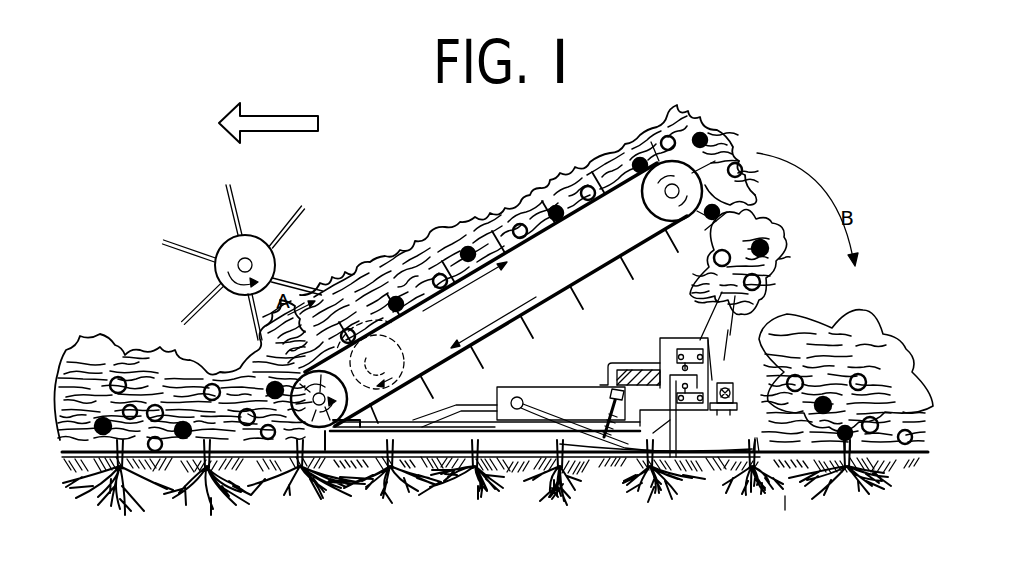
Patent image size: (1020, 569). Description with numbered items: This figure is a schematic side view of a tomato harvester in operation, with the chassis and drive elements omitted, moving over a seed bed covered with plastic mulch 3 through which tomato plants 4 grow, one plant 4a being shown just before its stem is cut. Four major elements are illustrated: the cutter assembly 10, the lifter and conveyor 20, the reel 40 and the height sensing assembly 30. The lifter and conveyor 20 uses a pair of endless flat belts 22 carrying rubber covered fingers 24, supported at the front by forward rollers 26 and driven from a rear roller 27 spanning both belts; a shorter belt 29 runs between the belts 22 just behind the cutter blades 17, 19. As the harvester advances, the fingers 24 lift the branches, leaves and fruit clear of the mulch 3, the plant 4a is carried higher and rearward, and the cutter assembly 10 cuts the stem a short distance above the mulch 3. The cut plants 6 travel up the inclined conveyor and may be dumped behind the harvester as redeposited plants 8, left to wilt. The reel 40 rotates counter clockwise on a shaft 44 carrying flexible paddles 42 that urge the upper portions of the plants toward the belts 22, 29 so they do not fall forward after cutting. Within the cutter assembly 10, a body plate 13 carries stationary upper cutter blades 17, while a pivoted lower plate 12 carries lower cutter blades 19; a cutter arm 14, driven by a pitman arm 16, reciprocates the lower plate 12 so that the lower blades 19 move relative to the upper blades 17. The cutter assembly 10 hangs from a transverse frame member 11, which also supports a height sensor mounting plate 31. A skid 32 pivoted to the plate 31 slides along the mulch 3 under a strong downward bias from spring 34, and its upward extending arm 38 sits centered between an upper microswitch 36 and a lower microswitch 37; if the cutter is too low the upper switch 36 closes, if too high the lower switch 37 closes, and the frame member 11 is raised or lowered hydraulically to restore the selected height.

The plastic mulch 3 is at (758, 446).
The tomato plants 4 is at (126, 350).
The plant just prior to cutting 4a is at (192, 414).
The cut plants 6 is at (459, 207).
The redeposited plants 8 is at (888, 398).
The cutter assembly 10 is at (482, 396).
The transverse frame member 11 is at (644, 372).
The lower plate 12 is at (445, 432).
The body plate 13 is at (434, 389).
The cutter arm 14 is at (465, 403).
The pitman arm 16 is at (733, 395).
The upper cutter blades 17 is at (378, 421).
The lower cutter blades 19 is at (328, 434).
The lifter and conveyor 20 is at (503, 284).
The endless flat belts 22 is at (549, 232).
The rubber covered fingers 24 is at (588, 300).
The forward rollers 26 is at (376, 362).
The rear roller 27 is at (655, 198).
The shorter belt 29 is at (402, 333).
The height sensing assembly 30 is at (701, 366).
The height sensor mounting plate 31 is at (580, 390).
The skid 32 is at (722, 447).
The spring 34 is at (610, 407).
The upper microswitch 36 is at (688, 350).
The lower microswitch 37 is at (703, 392).
The upward extending arm 38 is at (673, 440).
The reel 40 is at (226, 250).
The flexible paddles 42 is at (172, 251).
The shaft 44 is at (248, 258).